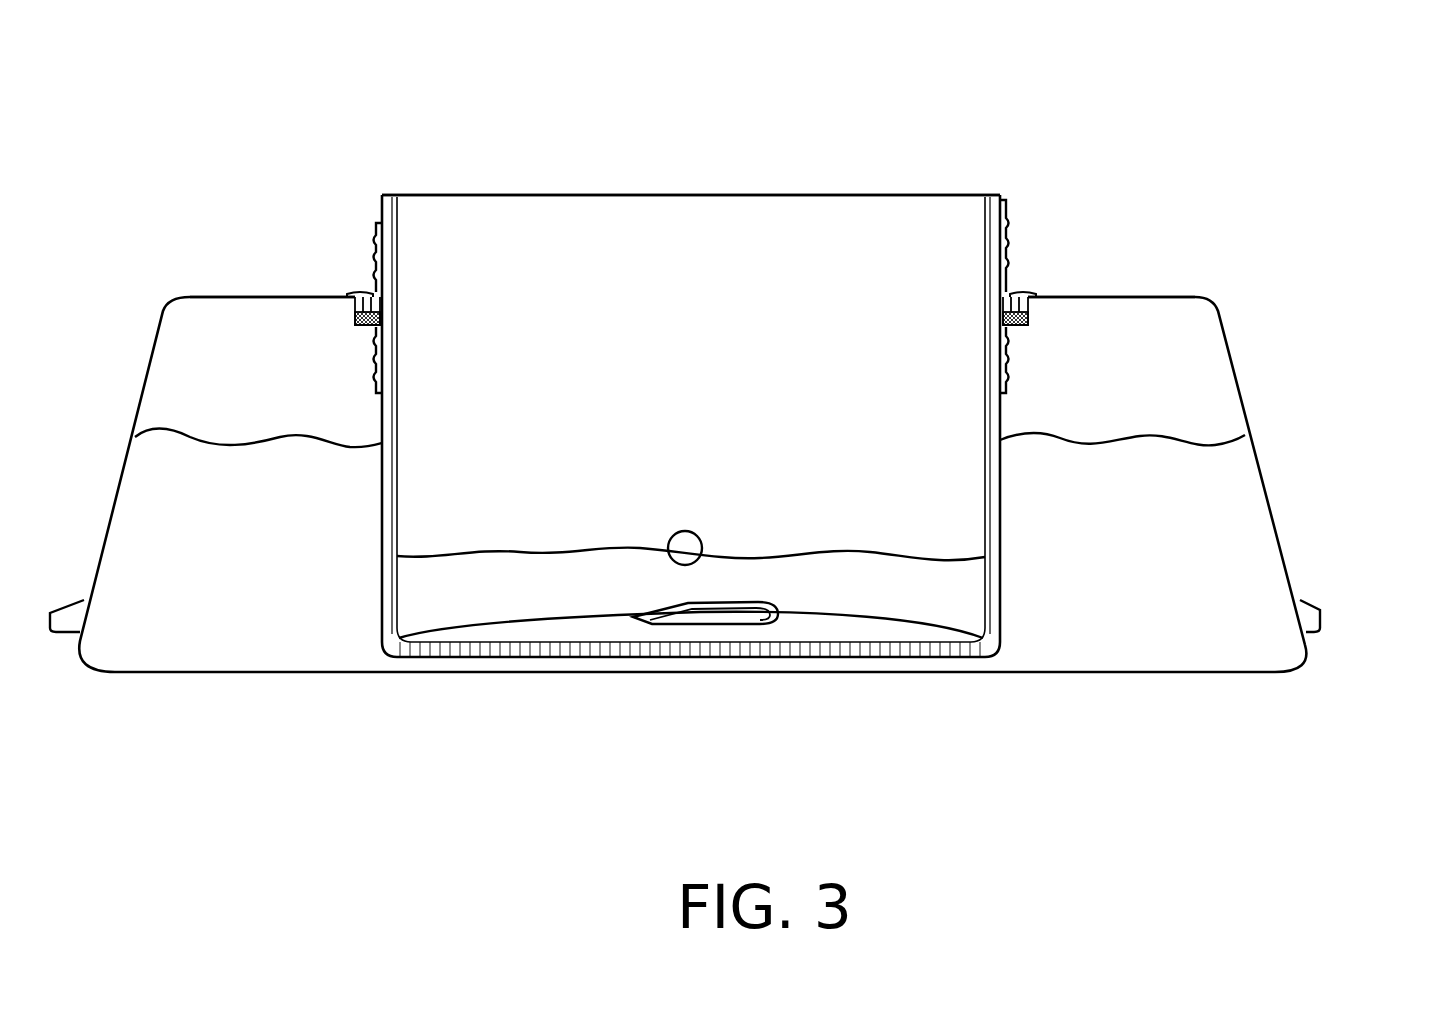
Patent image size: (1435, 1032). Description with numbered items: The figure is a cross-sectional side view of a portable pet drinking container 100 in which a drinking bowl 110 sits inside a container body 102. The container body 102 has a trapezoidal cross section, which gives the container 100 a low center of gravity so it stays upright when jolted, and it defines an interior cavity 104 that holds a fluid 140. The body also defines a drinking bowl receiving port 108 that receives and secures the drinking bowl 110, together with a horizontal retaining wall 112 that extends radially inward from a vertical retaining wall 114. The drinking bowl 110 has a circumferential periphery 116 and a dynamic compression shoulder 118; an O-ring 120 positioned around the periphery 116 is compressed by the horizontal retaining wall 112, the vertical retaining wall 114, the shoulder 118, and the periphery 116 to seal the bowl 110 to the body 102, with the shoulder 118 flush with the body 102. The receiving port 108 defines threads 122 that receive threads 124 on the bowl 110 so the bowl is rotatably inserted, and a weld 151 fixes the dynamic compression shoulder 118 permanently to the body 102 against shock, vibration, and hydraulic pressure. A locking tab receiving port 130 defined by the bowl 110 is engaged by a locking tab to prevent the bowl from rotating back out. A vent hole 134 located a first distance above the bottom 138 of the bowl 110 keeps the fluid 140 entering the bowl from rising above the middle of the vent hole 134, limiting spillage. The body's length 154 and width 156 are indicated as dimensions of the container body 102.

The portable pet drinking container 100 is at (190, 98).
The container body 102 is at (1280, 500).
The interior cavity 104 is at (1082, 648).
The drinking bowl receiving port 108 is at (1002, 383).
The drinking bowl 110 is at (503, 195).
The horizontal retaining wall 112 is at (1030, 323).
The vertical retaining wall 114 is at (1030, 312).
The circumferential periphery 116 is at (1003, 325).
The dynamic compression shoulder 118 is at (378, 303).
The O-ring 120 is at (382, 318).
The threads 122 is at (376, 346).
The threads 124 is at (380, 352).
The locking tab receiving port 130 is at (778, 614).
The vent hole 134 is at (698, 535).
The bottom 138 is at (580, 645).
The fluid 140 is at (1244, 412).
The weld 151 is at (352, 296).
The length 154 is at (1297, 730).
The width 156 is at (1310, 283).